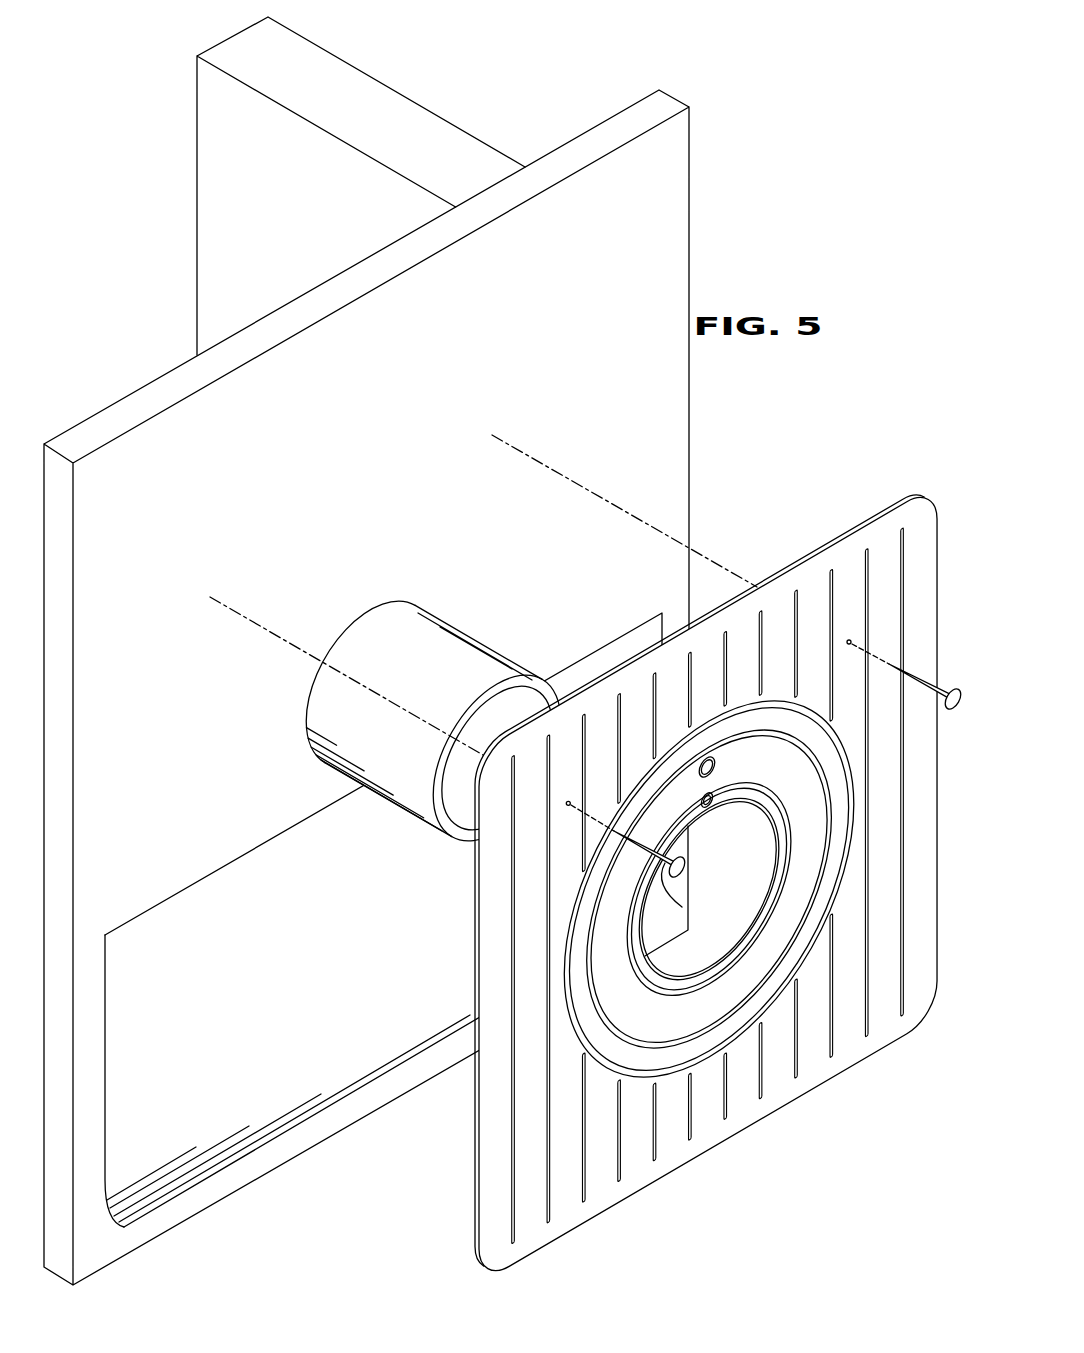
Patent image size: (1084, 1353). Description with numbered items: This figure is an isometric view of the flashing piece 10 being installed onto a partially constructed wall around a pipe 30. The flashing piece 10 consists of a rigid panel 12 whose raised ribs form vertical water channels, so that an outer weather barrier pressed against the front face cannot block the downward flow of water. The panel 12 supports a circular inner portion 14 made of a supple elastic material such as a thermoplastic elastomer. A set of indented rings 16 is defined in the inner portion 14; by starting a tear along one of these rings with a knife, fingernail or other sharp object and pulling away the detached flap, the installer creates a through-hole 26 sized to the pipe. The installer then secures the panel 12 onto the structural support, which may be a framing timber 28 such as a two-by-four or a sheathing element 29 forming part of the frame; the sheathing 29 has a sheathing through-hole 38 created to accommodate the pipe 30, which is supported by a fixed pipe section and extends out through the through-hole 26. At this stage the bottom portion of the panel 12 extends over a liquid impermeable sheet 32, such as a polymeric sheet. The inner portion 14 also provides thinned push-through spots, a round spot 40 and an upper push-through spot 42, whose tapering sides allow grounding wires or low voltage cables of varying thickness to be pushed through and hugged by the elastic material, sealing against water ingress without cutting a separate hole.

The flashing piece 10 is at (740, 1160).
The rigid panel 12 is at (780, 569).
The circular inner portion 14 is at (819, 715).
The indented rings 16 is at (682, 1007).
The through-hole 26 is at (725, 940).
The framing timber 28 is at (397, 88).
The sheathing element 29 is at (690, 129).
The pipe 30 is at (474, 642).
The liquid impermeable sheet 32 is at (256, 1152).
The sheathing through-hole 38 is at (305, 727).
The thinned push-through spot 40 is at (708, 807).
The upper push-through spot 42 is at (718, 766).